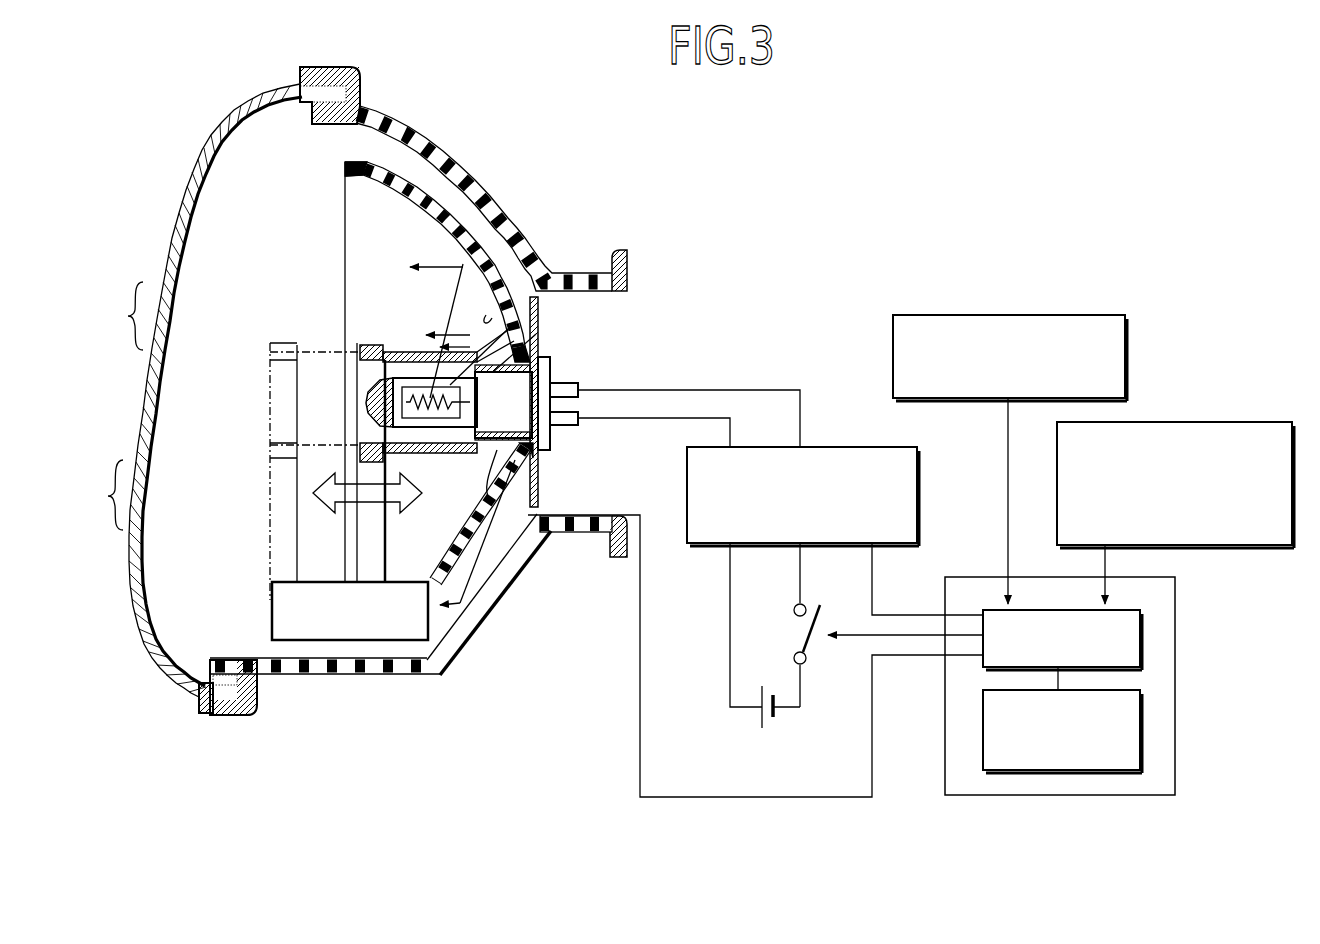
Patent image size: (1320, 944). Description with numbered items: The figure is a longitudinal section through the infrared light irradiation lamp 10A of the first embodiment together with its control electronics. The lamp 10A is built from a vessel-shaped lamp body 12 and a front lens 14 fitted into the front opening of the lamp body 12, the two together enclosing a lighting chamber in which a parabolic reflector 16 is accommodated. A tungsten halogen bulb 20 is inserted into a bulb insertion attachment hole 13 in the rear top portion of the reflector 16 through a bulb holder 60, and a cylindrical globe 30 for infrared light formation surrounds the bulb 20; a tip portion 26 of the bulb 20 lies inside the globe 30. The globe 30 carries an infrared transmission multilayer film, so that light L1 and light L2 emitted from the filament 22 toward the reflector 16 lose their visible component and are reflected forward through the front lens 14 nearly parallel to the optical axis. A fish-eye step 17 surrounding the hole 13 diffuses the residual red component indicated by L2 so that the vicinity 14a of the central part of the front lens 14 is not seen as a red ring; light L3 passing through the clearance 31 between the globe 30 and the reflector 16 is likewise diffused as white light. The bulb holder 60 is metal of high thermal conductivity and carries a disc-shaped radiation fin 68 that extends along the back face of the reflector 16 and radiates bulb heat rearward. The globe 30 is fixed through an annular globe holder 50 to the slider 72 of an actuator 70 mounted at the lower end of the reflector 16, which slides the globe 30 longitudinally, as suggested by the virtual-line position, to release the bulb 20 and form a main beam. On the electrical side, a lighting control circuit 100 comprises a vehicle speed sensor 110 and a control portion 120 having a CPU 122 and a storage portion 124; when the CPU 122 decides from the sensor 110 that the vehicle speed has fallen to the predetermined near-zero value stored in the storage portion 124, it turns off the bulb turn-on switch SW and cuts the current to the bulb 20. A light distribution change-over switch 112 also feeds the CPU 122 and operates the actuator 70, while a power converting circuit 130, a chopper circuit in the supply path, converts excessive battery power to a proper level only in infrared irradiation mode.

The infrared light irradiation lamp 10A is at (198, 127).
The front lens 14 is at (185, 192).
The vicinity of the central part of the front lens 14a is at (101, 406).
The lamp body 12 is at (497, 202).
The reflector 16 is at (408, 165).
The fish-eye step 17 is at (486, 315).
The tungsten halogen bulb 20 is at (380, 404).
The filament 22 is at (444, 418).
The bulb tip 26 is at (367, 403).
The globe for infrared light formation 30 is at (415, 378).
The globe holder 50 is at (368, 345).
The bulb insertion attachment hole 13 is at (482, 380).
The bulb holder 60 is at (546, 461).
The radiation fin 68 is at (545, 505).
The clearance 31 is at (486, 448).
The slider 72 is at (365, 540).
The actuator 70 is at (345, 630).
The light L1 is at (438, 267).
The light L2 is at (466, 336).
The light L3 is at (540, 332).
The lighting control circuit 100 is at (911, 580).
The power converting circuit 130 is at (843, 447).
The bulb turn-on switch SW is at (823, 625).
The vehicle speed sensor 110 is at (1012, 315).
The light distribution change-over switch 112 is at (1203, 422).
The control portion 120 is at (1105, 725).
The CPU 122 is at (1142, 637).
The storage portion 124 is at (1142, 730).